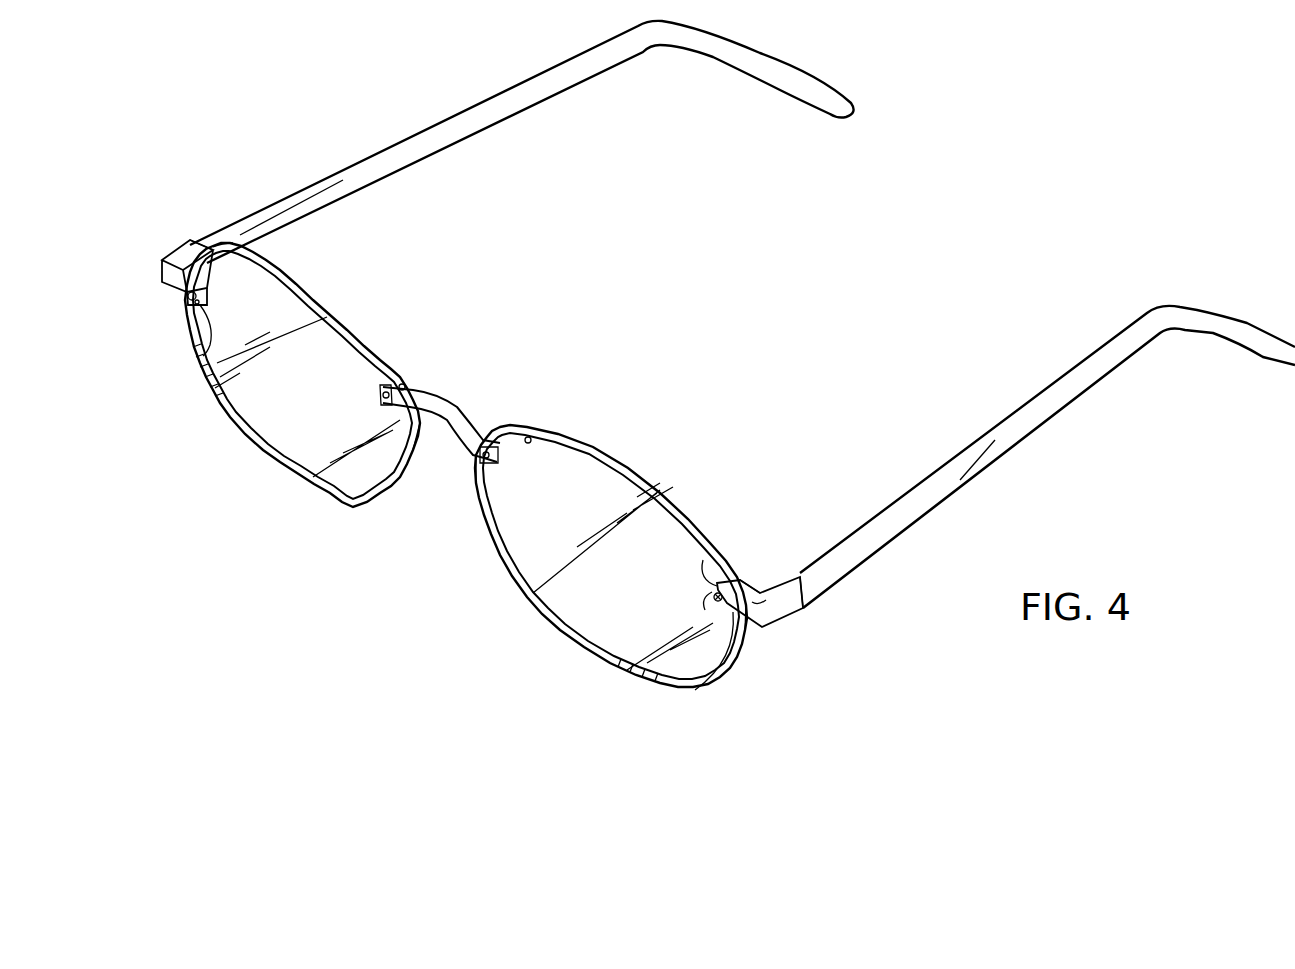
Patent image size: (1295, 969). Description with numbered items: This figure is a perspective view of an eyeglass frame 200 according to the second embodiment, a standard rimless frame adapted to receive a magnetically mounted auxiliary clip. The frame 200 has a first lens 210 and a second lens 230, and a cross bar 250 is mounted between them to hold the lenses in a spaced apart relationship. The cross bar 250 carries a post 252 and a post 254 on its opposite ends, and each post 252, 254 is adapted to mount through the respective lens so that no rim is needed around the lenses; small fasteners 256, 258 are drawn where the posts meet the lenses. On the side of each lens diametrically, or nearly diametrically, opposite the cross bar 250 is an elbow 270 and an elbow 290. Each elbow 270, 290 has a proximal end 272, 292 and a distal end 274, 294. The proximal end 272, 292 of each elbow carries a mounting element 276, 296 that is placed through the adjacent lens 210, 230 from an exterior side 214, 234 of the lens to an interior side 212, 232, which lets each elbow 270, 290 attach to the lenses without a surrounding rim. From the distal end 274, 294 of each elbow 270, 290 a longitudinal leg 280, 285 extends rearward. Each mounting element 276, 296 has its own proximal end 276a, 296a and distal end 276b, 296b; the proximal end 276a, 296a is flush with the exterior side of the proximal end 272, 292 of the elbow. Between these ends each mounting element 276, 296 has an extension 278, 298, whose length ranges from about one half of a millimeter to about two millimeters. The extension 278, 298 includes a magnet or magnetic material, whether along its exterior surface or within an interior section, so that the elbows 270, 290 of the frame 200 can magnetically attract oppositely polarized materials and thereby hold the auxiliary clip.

The eyeglass frame 200 is at (245, 603).
The first lens 210 is at (271, 383).
The interior side 212 is at (428, 455).
The exterior side 214 is at (180, 313).
The second lens 230 is at (608, 575).
The interior side 232 is at (470, 478).
The exterior side 234 is at (745, 650).
The cross bar 250 is at (442, 410).
The post 252 is at (382, 405).
The post 254 is at (492, 464).
The fastener 256 is at (402, 384).
The fastener 258 is at (528, 437).
The elbow 270 is at (222, 289).
The proximal end 272 is at (210, 300).
The distal end 274 is at (188, 241).
The mounting element 276 is at (162, 282).
The proximal end 276a is at (346, 274).
The distal end 276b is at (186, 340).
The extension 278 is at (194, 370).
The longitudinal leg 280 is at (487, 113).
The longitudinal leg 285 is at (957, 477).
The elbow 290 is at (745, 606).
The proximal end 292 is at (705, 560).
The distal end 294 is at (790, 605).
The mounting element 296 is at (712, 594).
The proximal end 296a is at (791, 554).
The distal end 296b is at (718, 603).
The extension 298 is at (702, 652).